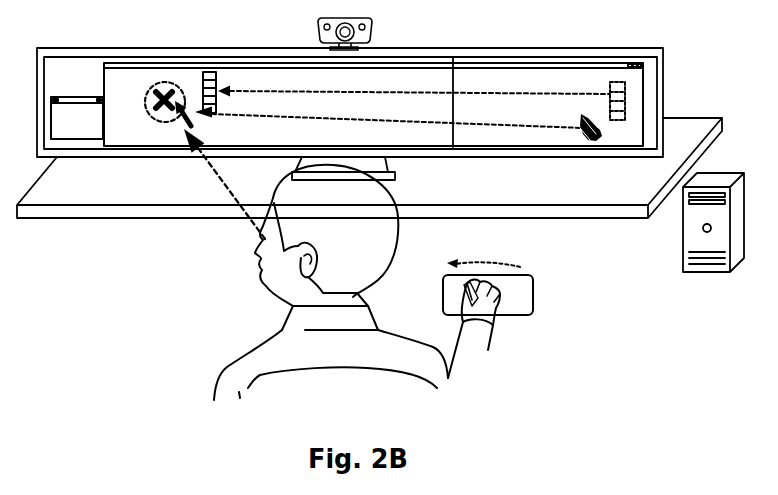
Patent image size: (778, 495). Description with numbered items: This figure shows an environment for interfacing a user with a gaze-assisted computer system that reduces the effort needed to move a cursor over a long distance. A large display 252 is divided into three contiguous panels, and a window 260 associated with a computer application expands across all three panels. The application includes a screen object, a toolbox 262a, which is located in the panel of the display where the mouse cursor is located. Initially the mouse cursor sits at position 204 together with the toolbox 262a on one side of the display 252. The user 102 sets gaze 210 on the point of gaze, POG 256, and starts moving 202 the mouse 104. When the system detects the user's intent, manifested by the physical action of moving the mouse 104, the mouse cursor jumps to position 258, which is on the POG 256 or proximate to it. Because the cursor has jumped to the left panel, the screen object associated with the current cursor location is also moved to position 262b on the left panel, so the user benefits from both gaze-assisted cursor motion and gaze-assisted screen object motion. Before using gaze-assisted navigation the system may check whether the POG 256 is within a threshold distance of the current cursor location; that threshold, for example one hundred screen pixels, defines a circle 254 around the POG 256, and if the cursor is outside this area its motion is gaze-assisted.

The user 102 is at (213, 390).
The mouse 104 is at (503, 293).
The mouse movement 202 is at (532, 266).
The mouse cursor initial position 204 is at (578, 118).
The gaze 210 is at (257, 228).
The large display 252 is at (61, 68).
The circle 254 is at (157, 93).
The point of gaze (POG) 256 is at (161, 82).
The mouse cursor jumped position 258 is at (177, 125).
The window 260 is at (483, 80).
The toolbox (screen object, original position) 262a is at (615, 81).
The screen object new position 262b is at (211, 71).